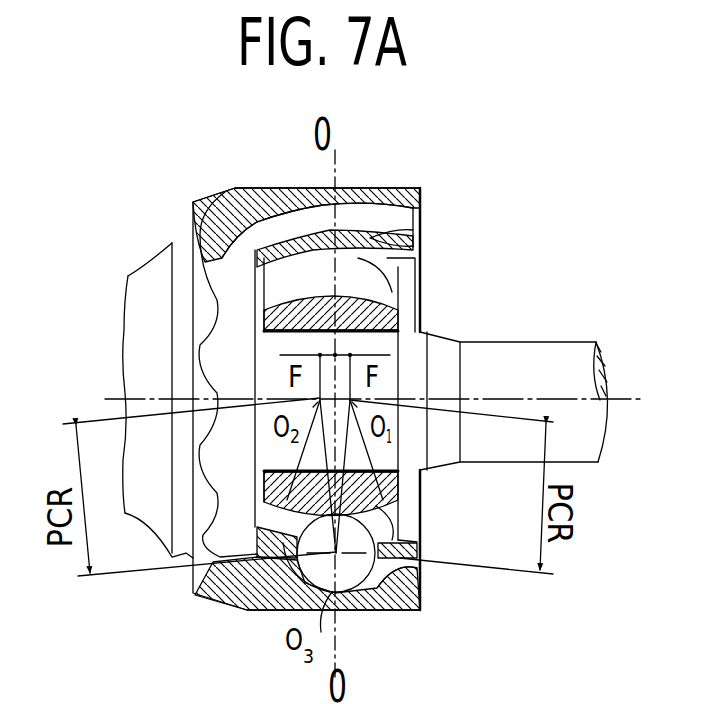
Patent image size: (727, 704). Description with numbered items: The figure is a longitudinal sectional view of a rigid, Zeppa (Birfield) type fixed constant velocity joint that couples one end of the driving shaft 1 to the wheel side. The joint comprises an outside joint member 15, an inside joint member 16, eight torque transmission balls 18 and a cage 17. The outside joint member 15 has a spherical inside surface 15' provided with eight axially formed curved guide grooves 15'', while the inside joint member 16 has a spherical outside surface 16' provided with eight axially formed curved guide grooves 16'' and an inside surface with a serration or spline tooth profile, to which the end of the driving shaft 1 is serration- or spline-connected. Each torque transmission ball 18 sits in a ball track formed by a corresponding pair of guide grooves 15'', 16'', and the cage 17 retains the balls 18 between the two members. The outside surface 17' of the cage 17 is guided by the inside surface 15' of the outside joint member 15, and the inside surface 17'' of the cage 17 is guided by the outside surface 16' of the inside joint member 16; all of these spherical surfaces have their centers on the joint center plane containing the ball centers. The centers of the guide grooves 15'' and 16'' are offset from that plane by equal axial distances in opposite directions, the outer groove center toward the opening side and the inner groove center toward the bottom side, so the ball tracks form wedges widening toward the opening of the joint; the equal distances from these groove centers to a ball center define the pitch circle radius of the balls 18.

The driving shaft 1 is at (588, 455).
The outside joint member 15 is at (346, 426).
The spherical inside surface 15' is at (305, 183).
The curved guide grooves 15'' is at (440, 591).
The inside joint member 16 is at (372, 407).
The spherical outside surface 16' is at (200, 204).
The curved guide grooves 16'' is at (437, 512).
The cage 17 is at (261, 598).
The outside surface of the cage 17' is at (369, 222).
The inside surface of the cage 17'' is at (427, 292).
The torque transmission balls 18 is at (368, 593).